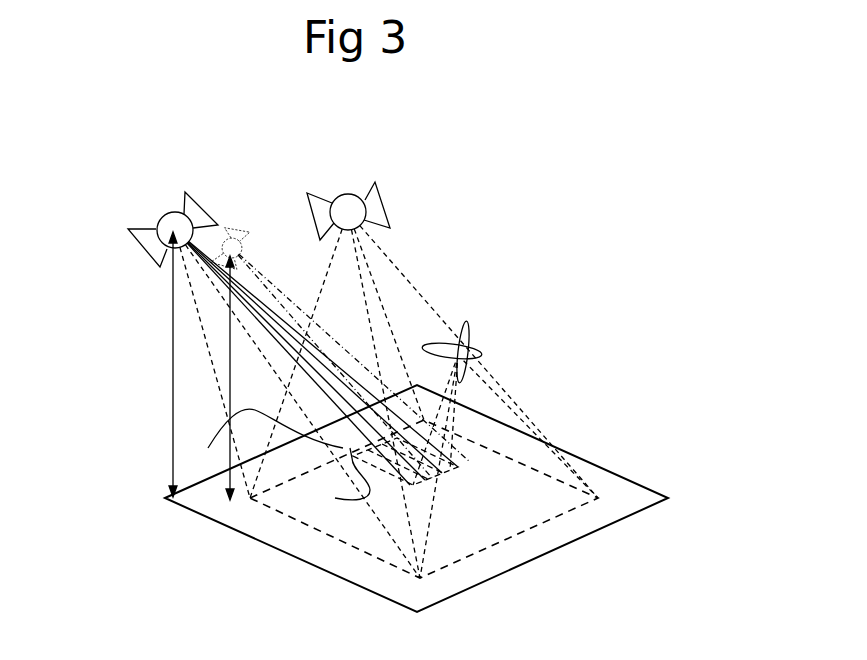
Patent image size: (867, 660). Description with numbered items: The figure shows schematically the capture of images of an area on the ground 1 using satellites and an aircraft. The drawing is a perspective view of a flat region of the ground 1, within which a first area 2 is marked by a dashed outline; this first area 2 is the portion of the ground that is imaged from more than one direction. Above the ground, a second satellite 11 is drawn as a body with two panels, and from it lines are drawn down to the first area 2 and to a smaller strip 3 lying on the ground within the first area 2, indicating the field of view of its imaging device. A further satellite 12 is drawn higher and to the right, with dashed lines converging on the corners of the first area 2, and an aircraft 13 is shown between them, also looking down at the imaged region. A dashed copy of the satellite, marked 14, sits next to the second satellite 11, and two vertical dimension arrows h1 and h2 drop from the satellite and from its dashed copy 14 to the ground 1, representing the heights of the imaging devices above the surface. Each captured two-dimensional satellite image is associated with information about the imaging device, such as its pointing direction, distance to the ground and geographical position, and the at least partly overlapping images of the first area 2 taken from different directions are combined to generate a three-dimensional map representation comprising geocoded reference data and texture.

The ground 1 is at (632, 496).
The first area 2 is at (483, 525).
The imaged swath / strips 3 is at (445, 470).
The second satellite 11 is at (150, 238).
The second satellite 12 is at (377, 183).
The aircraft 13 is at (480, 350).
The displaced position of first satellite 14 is at (207, 268).
The altitude of first satellite h1 is at (173, 443).
The altitude of displaced satellite h2 is at (230, 392).